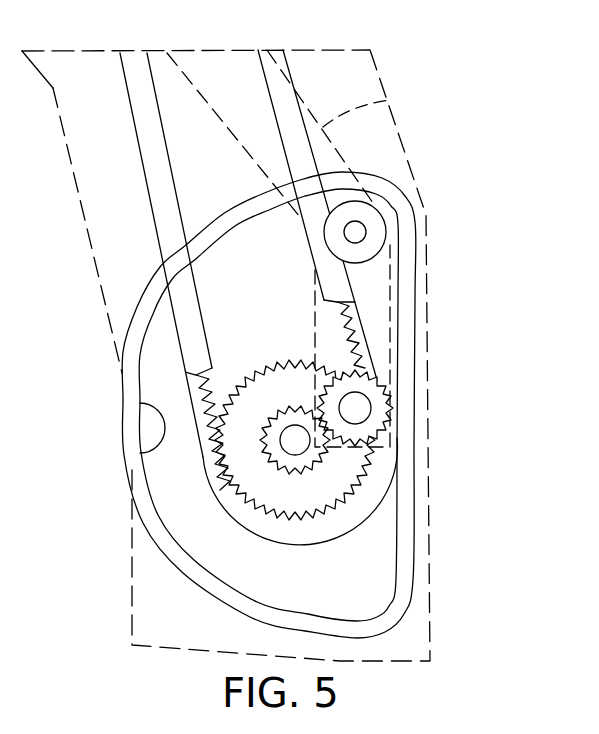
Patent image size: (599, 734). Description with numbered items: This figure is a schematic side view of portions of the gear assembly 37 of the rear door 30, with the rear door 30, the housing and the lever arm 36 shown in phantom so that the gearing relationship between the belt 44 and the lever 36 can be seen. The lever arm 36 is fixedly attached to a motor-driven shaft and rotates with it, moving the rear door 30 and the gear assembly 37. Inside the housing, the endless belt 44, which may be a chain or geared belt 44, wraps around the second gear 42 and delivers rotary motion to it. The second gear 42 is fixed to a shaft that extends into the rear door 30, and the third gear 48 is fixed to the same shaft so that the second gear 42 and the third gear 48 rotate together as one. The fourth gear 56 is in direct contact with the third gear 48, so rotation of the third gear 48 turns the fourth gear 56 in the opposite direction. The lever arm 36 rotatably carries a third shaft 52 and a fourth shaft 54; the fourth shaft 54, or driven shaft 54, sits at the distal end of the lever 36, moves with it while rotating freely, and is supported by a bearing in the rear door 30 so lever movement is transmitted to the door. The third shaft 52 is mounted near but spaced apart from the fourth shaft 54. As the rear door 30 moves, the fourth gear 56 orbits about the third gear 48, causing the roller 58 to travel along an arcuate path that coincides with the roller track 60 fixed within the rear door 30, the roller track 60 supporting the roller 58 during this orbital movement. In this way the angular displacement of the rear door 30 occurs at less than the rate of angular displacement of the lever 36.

The rear door 30 is at (413, 632).
The lever arm 36 is at (393, 100).
The gear assembly 37 is at (481, 136).
The second gear 42 is at (257, 480).
The endless belt 44 is at (287, 512).
The third gear 48 is at (282, 423).
The third shaft 52 is at (355, 232).
The fourth shaft 54 is at (358, 412).
The fourth gear 56 is at (370, 388).
The roller 58 is at (363, 252).
The roller track 60 is at (142, 450).